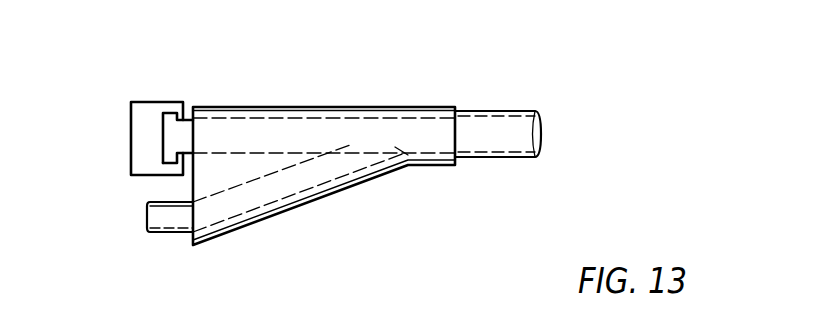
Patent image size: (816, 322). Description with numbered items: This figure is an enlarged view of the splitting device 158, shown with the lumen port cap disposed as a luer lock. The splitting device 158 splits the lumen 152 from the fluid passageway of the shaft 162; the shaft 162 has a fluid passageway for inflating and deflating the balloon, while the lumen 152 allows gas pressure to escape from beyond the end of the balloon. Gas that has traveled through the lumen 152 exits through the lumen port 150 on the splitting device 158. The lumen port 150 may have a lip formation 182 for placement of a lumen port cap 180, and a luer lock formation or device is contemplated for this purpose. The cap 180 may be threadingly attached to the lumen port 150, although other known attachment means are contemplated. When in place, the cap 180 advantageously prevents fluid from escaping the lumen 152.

The lumen port 150 is at (163, 127).
The lumen 152 is at (297, 118).
The splitting device 158 is at (362, 106).
The shaft 162 is at (508, 111).
The lumen port cap 180 is at (132, 143).
The lip formation 182 is at (176, 165).